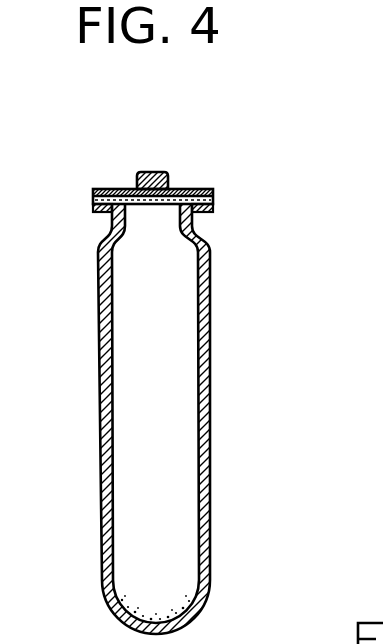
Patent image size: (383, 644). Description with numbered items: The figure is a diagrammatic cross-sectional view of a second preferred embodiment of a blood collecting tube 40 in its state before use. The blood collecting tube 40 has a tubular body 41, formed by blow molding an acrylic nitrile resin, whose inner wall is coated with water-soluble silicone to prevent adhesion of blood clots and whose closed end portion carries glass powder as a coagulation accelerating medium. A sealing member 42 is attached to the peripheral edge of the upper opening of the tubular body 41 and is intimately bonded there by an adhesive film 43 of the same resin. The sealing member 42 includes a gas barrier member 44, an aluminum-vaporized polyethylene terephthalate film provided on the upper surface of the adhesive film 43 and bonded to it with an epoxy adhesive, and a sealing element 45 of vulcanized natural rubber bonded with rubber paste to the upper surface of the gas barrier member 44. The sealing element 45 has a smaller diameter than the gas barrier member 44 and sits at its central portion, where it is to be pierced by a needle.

The blood collecting tube 40 is at (276, 316).
The tubular body 41 is at (210, 390).
The sealing member 42 is at (200, 186).
The adhesive film 43 is at (213, 202).
The gas barrier member 44 is at (117, 190).
The sealing element 45 is at (160, 173).